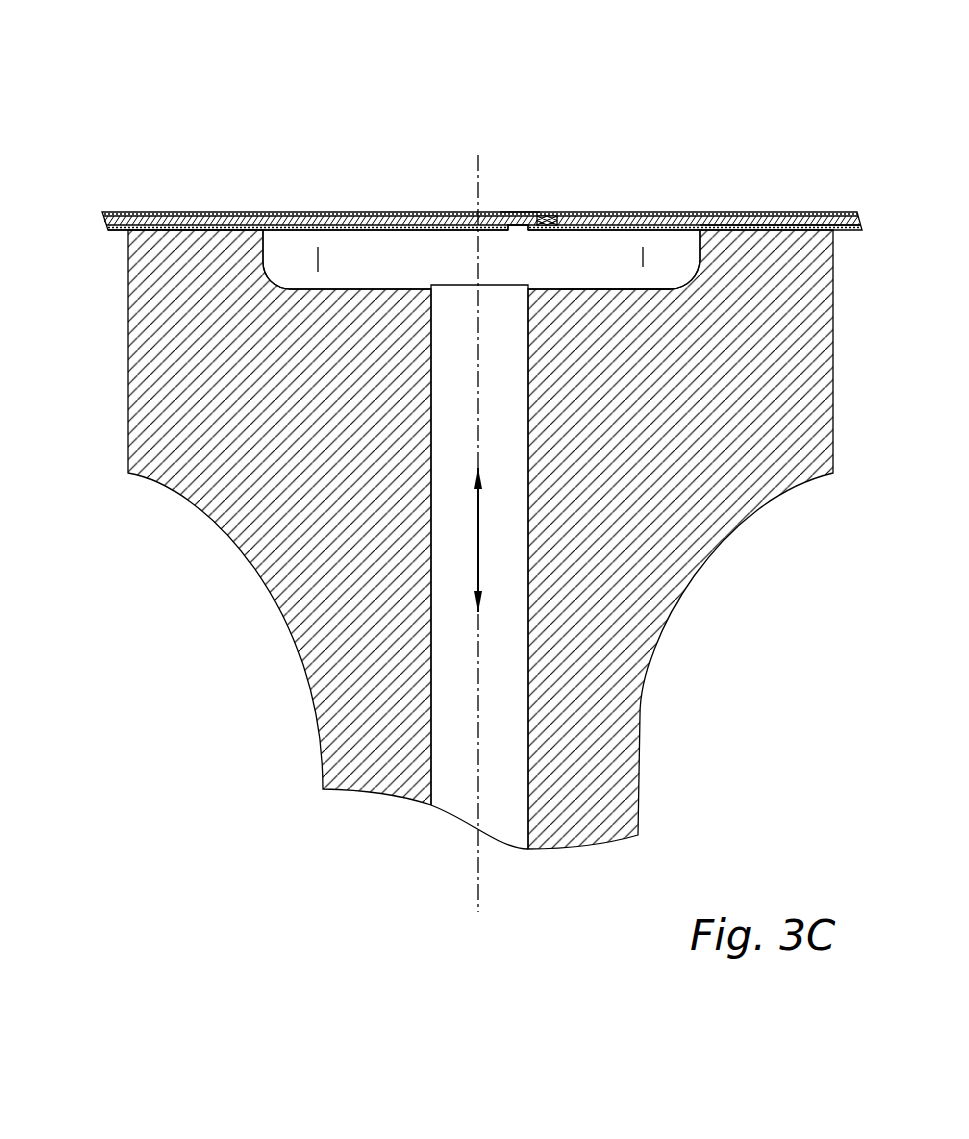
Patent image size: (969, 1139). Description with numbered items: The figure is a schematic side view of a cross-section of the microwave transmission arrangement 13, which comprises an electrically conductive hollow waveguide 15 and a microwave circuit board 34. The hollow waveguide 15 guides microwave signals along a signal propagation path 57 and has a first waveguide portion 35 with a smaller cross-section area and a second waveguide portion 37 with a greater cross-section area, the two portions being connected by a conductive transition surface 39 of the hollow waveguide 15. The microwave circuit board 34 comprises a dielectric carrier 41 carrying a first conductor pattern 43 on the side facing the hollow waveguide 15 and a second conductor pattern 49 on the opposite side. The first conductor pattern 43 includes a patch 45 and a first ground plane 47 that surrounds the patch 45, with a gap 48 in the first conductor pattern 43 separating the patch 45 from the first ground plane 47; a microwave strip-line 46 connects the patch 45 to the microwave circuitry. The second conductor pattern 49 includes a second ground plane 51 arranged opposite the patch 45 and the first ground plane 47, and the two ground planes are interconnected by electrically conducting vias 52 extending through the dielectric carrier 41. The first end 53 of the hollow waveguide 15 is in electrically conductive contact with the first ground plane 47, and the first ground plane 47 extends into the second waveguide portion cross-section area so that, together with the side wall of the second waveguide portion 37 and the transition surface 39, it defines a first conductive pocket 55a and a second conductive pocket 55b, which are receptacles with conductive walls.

The microwave transmission arrangement 13 is at (540, 77).
The electrically conductive hollow waveguide 15 is at (767, 657).
The microwave circuit board 34 is at (803, 188).
The first waveguide portion 35 is at (527, 324).
The second waveguide portion 37 is at (697, 258).
The conductive transition surface 39 is at (586, 288).
The dielectric carrier 41 is at (98, 222).
The first conductor pattern 43 is at (99, 231).
The patch 45 is at (465, 232).
The microwave strip-line 46 is at (332, 233).
The first ground plane 47 is at (580, 231).
The gap 48 is at (514, 234).
The second conductor pattern 49 is at (98, 212).
The second ground plane 51 is at (517, 211).
The electrically conducting vias 52 is at (556, 216).
The first end 53 is at (755, 228).
The first conductive pocket 55a is at (600, 246).
The second conductive pocket 55b is at (396, 256).
The signal propagation path 57 is at (479, 540).